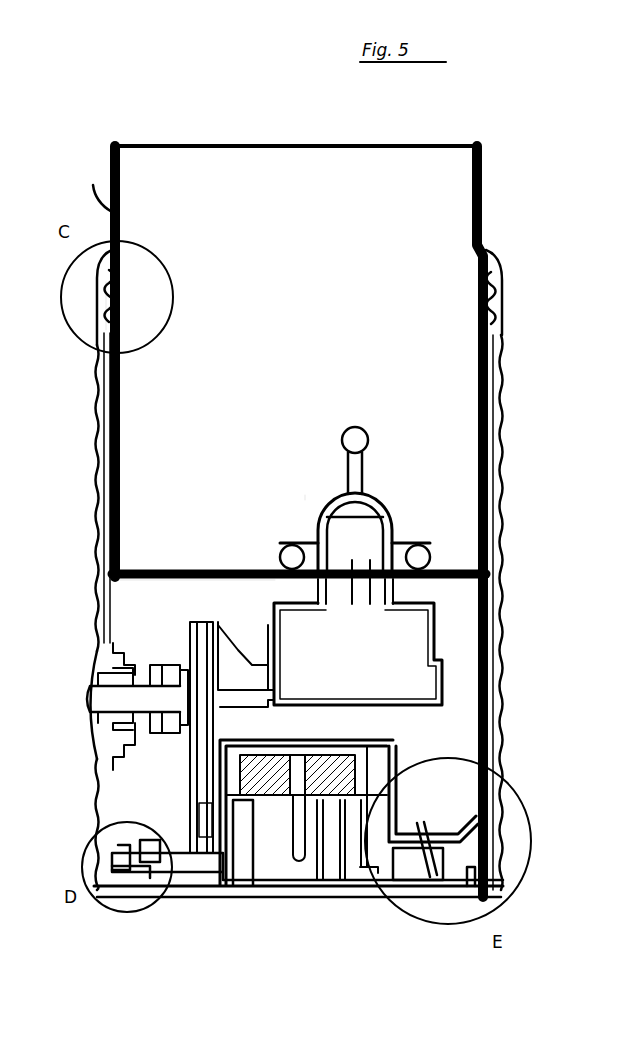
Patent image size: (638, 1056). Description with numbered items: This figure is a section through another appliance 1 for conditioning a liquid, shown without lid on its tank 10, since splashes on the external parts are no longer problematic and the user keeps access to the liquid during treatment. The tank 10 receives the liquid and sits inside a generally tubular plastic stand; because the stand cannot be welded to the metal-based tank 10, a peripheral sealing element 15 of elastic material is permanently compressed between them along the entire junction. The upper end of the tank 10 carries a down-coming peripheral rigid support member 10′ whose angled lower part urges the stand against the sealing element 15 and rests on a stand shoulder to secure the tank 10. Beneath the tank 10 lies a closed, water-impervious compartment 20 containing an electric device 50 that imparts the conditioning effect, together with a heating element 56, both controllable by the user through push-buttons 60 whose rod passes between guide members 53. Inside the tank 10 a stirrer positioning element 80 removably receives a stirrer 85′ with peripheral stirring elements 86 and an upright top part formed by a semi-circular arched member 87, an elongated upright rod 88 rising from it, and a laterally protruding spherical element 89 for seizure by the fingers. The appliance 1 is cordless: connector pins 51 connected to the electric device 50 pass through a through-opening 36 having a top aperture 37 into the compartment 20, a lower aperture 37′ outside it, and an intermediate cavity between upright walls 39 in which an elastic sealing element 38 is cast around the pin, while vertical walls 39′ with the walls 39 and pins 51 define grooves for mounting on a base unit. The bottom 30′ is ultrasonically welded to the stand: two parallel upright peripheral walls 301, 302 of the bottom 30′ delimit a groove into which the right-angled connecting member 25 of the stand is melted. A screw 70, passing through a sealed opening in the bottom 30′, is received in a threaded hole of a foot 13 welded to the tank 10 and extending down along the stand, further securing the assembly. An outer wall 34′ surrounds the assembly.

The appliance 1 is at (137, 91).
The tank 10 is at (125, 398).
The down-coming peripheral rigid support member 10′ is at (85, 187).
The peripheral sealing element 15 is at (123, 293).
The outer wall 34′ is at (100, 510).
The spherical element 89 is at (360, 444).
The elongated upright rod 88 is at (357, 470).
The semi-circular arched member 87 is at (320, 520).
The stirrer positioning element 80 is at (358, 536).
The stirring elements 86 is at (420, 560).
The stirrer 85′ is at (306, 485).
The compartment 20 is at (375, 653).
The heating element 56 is at (178, 583).
The electric device 50 is at (260, 626).
The push-button 60 is at (60, 714).
The guide members 53 is at (176, 675).
The upright walls 39 is at (232, 758).
The top aperture 37 is at (292, 758).
The through-opening 36 is at (300, 768).
The sealing element 38 is at (332, 770).
The feet 13 is at (468, 832).
The cordless connector pins 51 is at (296, 866).
The lower aperture 37′ is at (250, 870).
The vertical walls 39′ is at (334, 882).
The screw 70 is at (418, 874).
The bottom 30′ is at (196, 900).
The connecting member 25 is at (125, 862).
The upright peripheral wall 302 is at (148, 862).
The upright peripheral wall 301 is at (134, 864).